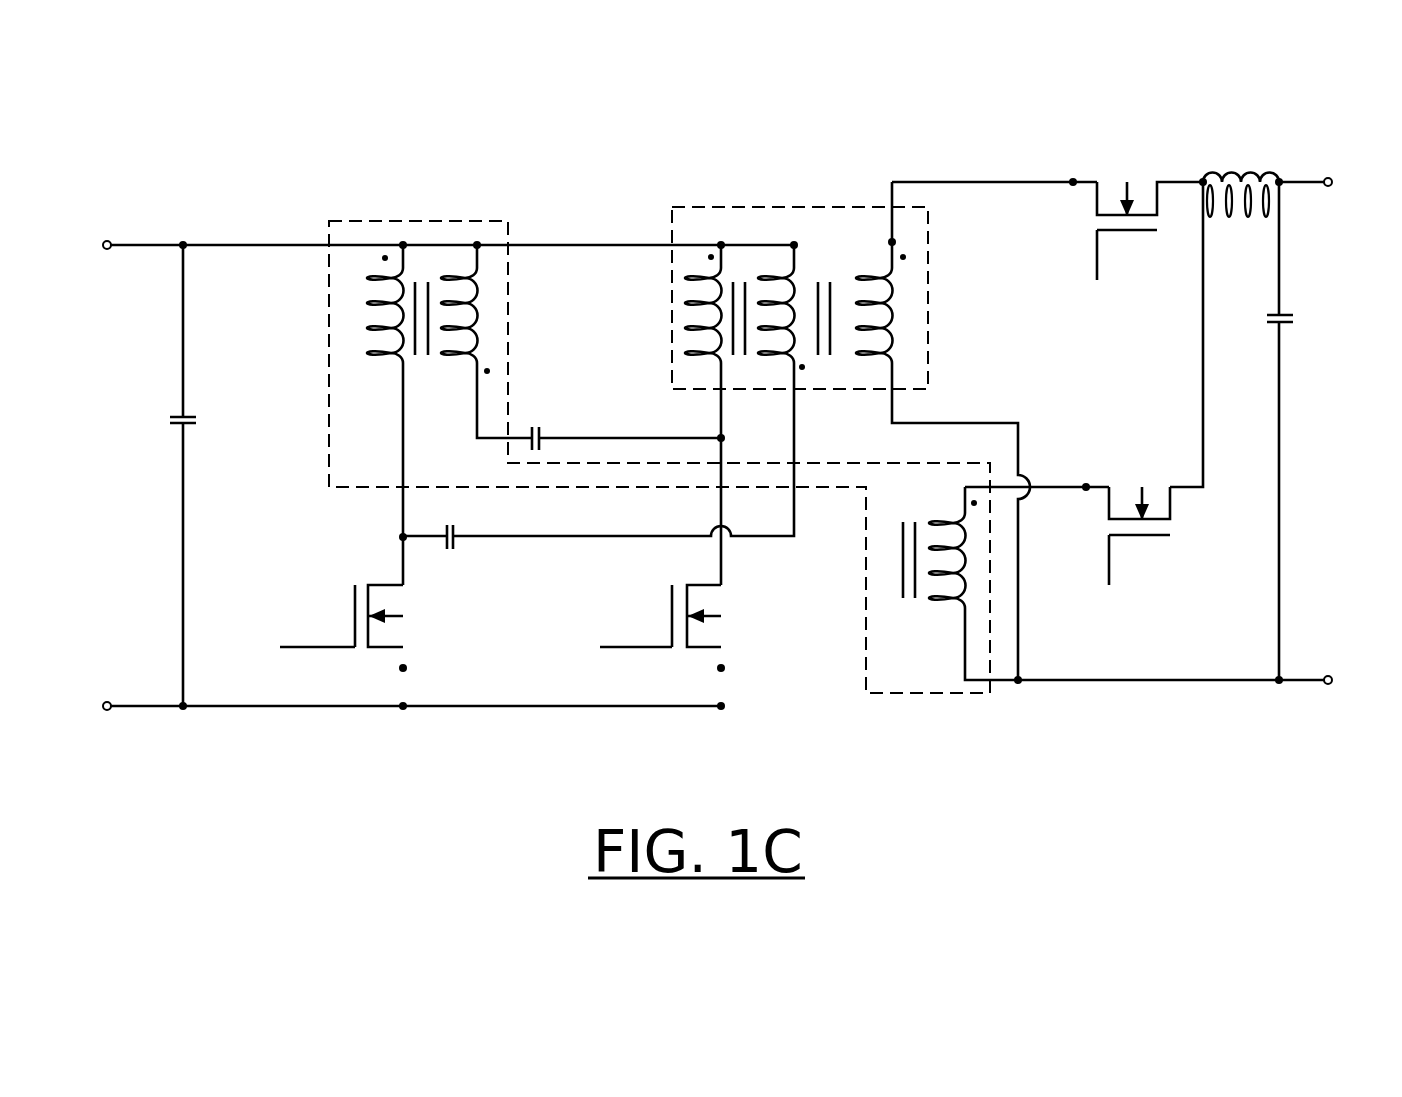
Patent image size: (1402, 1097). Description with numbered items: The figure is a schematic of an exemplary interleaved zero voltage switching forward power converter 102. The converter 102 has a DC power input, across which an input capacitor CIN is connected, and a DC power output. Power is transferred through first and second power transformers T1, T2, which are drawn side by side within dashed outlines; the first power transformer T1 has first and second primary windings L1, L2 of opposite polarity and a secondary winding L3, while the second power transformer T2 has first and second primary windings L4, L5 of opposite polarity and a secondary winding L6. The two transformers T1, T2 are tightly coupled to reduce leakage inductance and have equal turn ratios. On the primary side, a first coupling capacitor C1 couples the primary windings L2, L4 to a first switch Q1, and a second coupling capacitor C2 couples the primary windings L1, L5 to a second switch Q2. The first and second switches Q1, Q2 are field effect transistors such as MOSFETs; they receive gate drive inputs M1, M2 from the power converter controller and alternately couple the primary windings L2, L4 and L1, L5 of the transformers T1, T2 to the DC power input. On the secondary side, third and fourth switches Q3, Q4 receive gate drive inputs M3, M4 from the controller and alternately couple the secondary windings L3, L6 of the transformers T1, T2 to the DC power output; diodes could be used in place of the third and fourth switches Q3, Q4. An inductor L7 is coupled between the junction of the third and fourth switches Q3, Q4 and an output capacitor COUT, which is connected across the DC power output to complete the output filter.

The ZVS forward power converter 102 is at (733, 388).
The first power transformer T1 is at (467, 218).
The second power transformer T2 is at (805, 205).
The first primary winding L1 is at (375, 309).
The second primary winding L2 is at (463, 314).
The secondary winding L3 is at (940, 546).
The first primary winding L4 is at (699, 308).
The second primary winding L5 is at (781, 312).
The secondary winding L6 is at (878, 308).
The inductor L7 is at (1241, 178).
The first coupling capacitor C1 is at (542, 422).
The second coupling capacitor C2 is at (452, 520).
The input capacitor CIN is at (208, 419).
The output capacitor COUT is at (1317, 319).
The first switch Q1 is at (342, 621).
The second switch Q2 is at (661, 621).
The third switch Q3 is at (1131, 536).
The fourth switch Q4 is at (1141, 223).
The gate drive input M1 is at (297, 645).
The gate drive input M2 is at (615, 645).
The gate drive input M3 is at (1109, 576).
The gate drive input M4 is at (1096, 269).